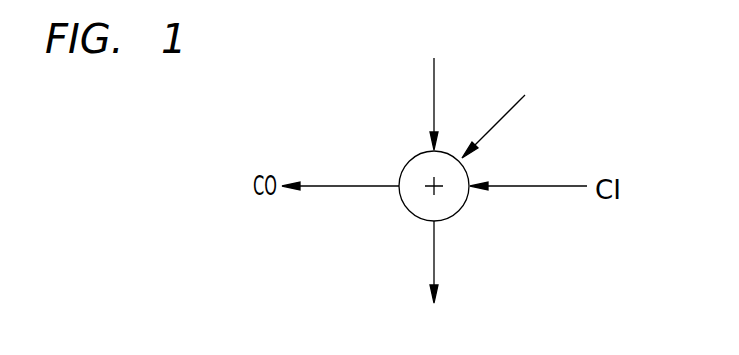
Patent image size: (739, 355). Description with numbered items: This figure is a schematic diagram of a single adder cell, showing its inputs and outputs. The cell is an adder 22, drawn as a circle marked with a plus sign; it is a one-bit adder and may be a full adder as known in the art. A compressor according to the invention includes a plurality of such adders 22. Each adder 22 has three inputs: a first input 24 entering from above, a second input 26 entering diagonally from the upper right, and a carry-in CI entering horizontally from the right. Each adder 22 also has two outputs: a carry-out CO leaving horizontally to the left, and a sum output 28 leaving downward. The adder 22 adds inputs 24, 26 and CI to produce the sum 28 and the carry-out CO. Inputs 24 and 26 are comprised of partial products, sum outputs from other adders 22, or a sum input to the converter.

The adder 22 is at (400, 207).
The input 24 is at (431, 93).
The input 26 is at (503, 122).
The sum output 28 is at (436, 270).